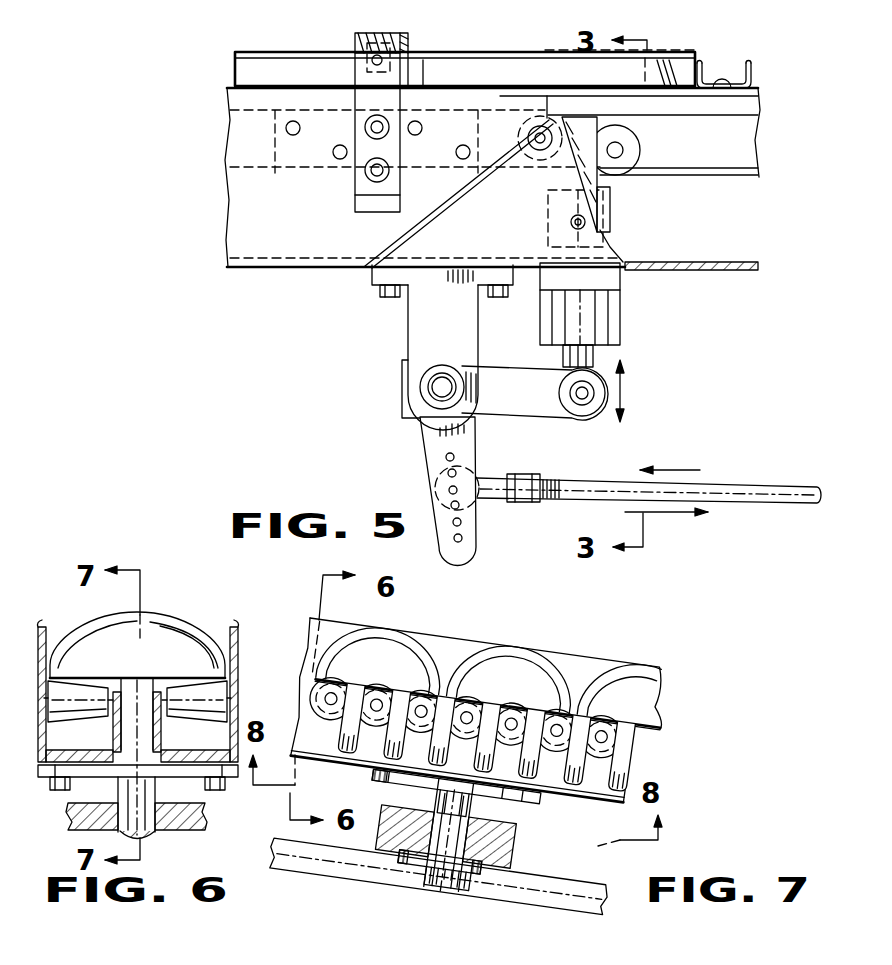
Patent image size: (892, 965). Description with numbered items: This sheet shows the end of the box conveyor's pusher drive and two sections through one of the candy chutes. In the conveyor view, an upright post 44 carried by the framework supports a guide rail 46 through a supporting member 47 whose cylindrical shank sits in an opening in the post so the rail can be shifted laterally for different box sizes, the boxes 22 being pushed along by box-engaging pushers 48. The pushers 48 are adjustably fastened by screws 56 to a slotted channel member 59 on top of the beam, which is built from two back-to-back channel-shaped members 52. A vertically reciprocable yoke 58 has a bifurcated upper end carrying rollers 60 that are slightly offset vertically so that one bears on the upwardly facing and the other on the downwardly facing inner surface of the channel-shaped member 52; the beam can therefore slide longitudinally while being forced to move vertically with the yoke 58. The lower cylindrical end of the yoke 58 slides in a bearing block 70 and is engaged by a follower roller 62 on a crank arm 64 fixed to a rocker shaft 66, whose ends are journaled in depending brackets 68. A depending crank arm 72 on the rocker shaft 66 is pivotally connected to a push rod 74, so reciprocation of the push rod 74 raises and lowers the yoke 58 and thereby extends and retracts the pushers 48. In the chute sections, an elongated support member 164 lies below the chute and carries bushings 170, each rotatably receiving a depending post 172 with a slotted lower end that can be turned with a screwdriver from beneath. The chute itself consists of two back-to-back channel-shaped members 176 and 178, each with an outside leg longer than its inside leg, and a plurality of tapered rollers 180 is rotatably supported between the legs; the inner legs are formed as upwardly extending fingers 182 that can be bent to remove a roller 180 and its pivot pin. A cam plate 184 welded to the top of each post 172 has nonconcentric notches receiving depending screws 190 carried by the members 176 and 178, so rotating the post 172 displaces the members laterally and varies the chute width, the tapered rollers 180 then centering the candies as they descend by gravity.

In FIG. 5, the box 22 is at (673, 50).
In FIG. 5, the upright post 44 is at (354, 64).
In FIG. 5, the guide rail 46 is at (263, 66).
In FIG. 5, the supporting member 47 is at (412, 50).
In FIG. 5, the box-engaging pusher 48 is at (753, 75).
In FIG. 5, the channel-shaped member 52 is at (646, 178).
In FIG. 5, the screw 56 is at (727, 83).
In FIG. 5, the yoke 58 is at (610, 203).
In FIG. 5, the channel member 59 is at (745, 107).
In FIG. 5, the roller 60 is at (640, 147).
In FIG. 5, the follower roller 62 is at (578, 417).
In FIG. 5, the crank arm 64 is at (497, 413).
In FIG. 5, the rocker shaft 66 is at (440, 388).
In FIG. 5, the depending bracket 68 is at (408, 334).
In FIG. 5, the bearing block 70 is at (617, 280).
In FIG. 5, the depending crank arm 72 is at (422, 447).
In FIG. 5, the push rod 74 is at (745, 487).
In FIG. 7, the support member 164 is at (533, 882).
In FIG. 6, the bushing 170 is at (163, 825).
In FIG. 7, the bushing 170 is at (517, 856).
In FIG. 6, the depending post 172 is at (144, 830).
In FIG. 7, the depending post 172 is at (473, 812).
In FIG. 6, the channel-shaped member 176 is at (38, 630).
In FIG. 7, the channel-shaped member 176 is at (595, 662).
In FIG. 6, the channel-shaped member 178 is at (240, 630).
In FIG. 6, the tapered roller 180 is at (98, 722).
In FIG. 7, the finger 182 is at (440, 698).
In FIG. 6, the cam plate 184 is at (230, 787).
In FIG. 7, the cam plate 184 is at (373, 772).
In FIG. 6, the depending screw 190 is at (60, 793).
In FIG. 7, the depending screw 190 is at (440, 802).